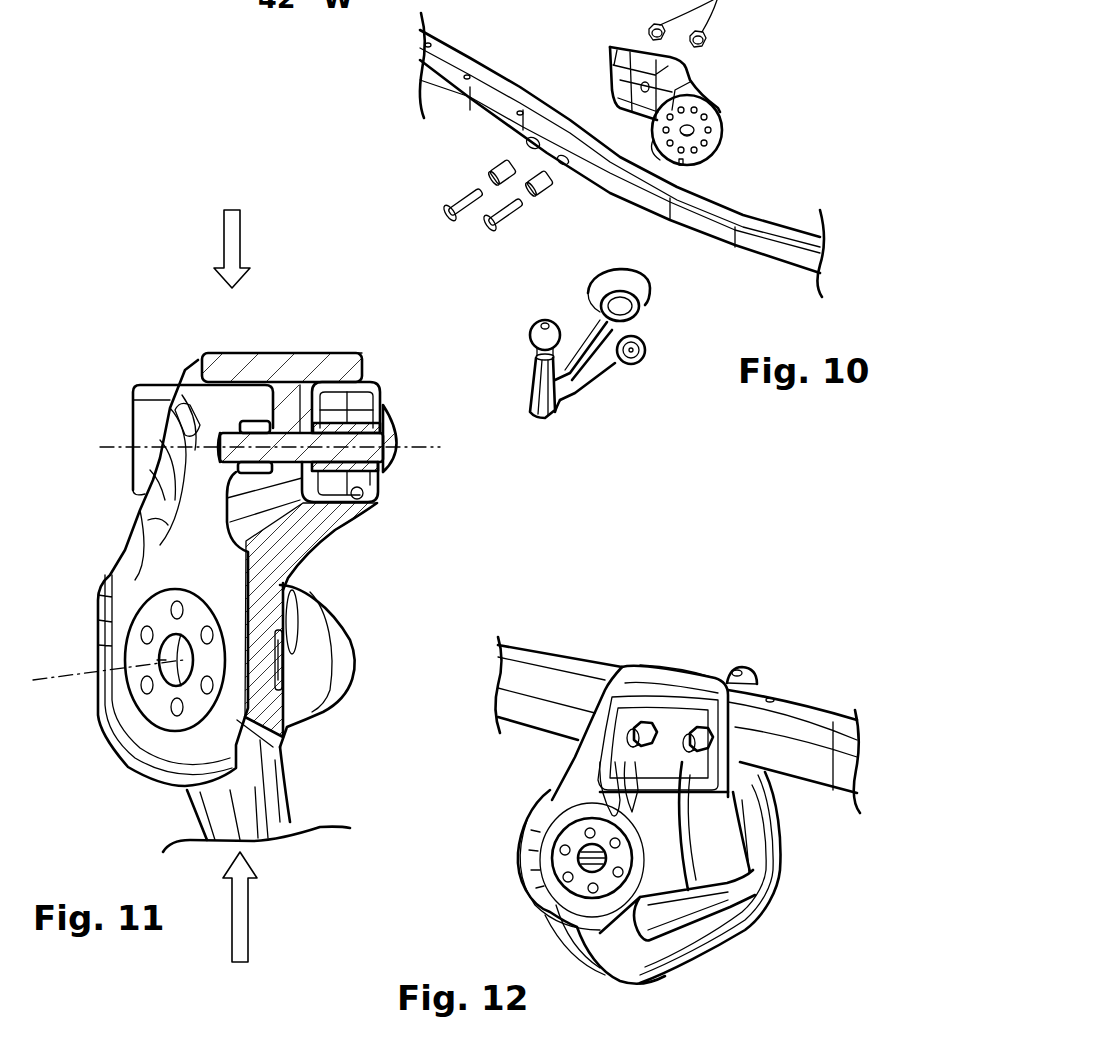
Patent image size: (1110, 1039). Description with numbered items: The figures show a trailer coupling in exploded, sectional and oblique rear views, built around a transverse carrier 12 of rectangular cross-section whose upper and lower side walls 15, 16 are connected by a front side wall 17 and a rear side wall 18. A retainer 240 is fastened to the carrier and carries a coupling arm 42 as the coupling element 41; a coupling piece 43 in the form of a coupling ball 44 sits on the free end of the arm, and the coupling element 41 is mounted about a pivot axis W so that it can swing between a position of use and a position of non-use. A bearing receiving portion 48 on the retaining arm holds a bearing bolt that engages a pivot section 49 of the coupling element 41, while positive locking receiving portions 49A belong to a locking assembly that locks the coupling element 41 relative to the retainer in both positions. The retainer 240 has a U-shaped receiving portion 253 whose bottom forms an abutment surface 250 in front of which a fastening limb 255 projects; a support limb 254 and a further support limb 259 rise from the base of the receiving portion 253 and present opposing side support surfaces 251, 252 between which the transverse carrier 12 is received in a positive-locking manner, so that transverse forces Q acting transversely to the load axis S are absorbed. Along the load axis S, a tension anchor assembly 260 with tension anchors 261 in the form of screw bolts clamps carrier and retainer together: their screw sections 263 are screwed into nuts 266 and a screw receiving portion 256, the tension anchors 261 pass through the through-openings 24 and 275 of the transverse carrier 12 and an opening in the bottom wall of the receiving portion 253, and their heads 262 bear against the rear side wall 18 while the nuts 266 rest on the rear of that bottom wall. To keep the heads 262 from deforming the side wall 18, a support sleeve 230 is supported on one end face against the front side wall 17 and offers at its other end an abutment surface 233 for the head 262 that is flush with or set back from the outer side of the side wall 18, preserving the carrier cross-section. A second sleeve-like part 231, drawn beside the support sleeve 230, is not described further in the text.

In FIG. 10, the transverse carrier 12 is at (785, 232).
In FIG. 11, the transverse carrier 12 is at (367, 380).
In FIG. 12, the transverse carrier 12 is at (822, 717).
In FIG. 11, the upper side wall 15 is at (332, 390).
In FIG. 11, the lower side wall 16 is at (363, 507).
In FIG. 11, the front side wall 17 is at (312, 490).
In FIG. 11, the rear side wall 18 is at (380, 403).
In FIG. 10, the through-opening 24 is at (536, 150).
In FIG. 10, the coupling element 41 is at (590, 393).
In FIG. 11, the coupling element 41 is at (295, 812).
In FIG. 12, the coupling element 41 is at (774, 900).
In FIG. 10, the coupling arm 42 is at (555, 410).
In FIG. 12, the coupling piece 43 is at (760, 683).
In FIG. 10, the coupling ball 44 is at (538, 330).
In FIG. 12, the coupling ball 44 is at (743, 667).
In FIG. 10, the bearing receiving portion 48 is at (692, 132).
In FIG. 10, the pivot section 49 is at (645, 288).
In FIG. 10, the positive locking receiving portions 49A is at (720, 122).
In FIG. 10, the support sleeve 230 is at (522, 192).
In FIG. 11, the support sleeve 230 is at (355, 476).
In FIG. 10, the spacer sleeve 231 is at (495, 175).
In FIG. 11, the abutment surface 233 is at (385, 470).
In FIG. 10, the retainer 240 is at (722, 106).
In FIG. 11, the retainer 240 is at (193, 362).
In FIG. 12, the retainer 240 is at (645, 670).
In FIG. 11, the abutment surface 250 is at (307, 395).
In FIG. 11, the side support surface 251 is at (362, 497).
In FIG. 11, the side support surface 252 is at (365, 387).
In FIG. 10, the receiving portion 253 is at (627, 85).
In FIG. 11, the support limb 254 is at (330, 533).
In FIG. 11, the fastening limb 255 is at (282, 487).
In FIG. 10, the screw receiving portion 256 is at (634, 80).
In FIG. 11, the screw receiving portion 256 is at (283, 430).
In FIG. 11, the further support limb 259 is at (345, 363).
In FIG. 12, the further support limb 259 is at (693, 675).
In FIG. 10, the tension anchor assembly 260 is at (430, 207).
In FIG. 10, the tension anchors 261 is at (445, 219).
In FIG. 11, the tension anchors 261 is at (400, 455).
In FIG. 12, the tension anchors 261 is at (688, 745).
In FIG. 10, the heads 262 is at (497, 233).
In FIG. 11, the heads 262 is at (397, 440).
In FIG. 11, the screw sections 263 is at (230, 440).
In FIG. 11, the nuts 266 is at (253, 428).
In FIG. 11, the through-opening 275 is at (310, 470).
In FIG. 11, the transverse forces Q is at (233, 933).
In FIG. 11, the load axis S is at (117, 443).
In FIG. 11, the pivot axis W is at (60, 677).